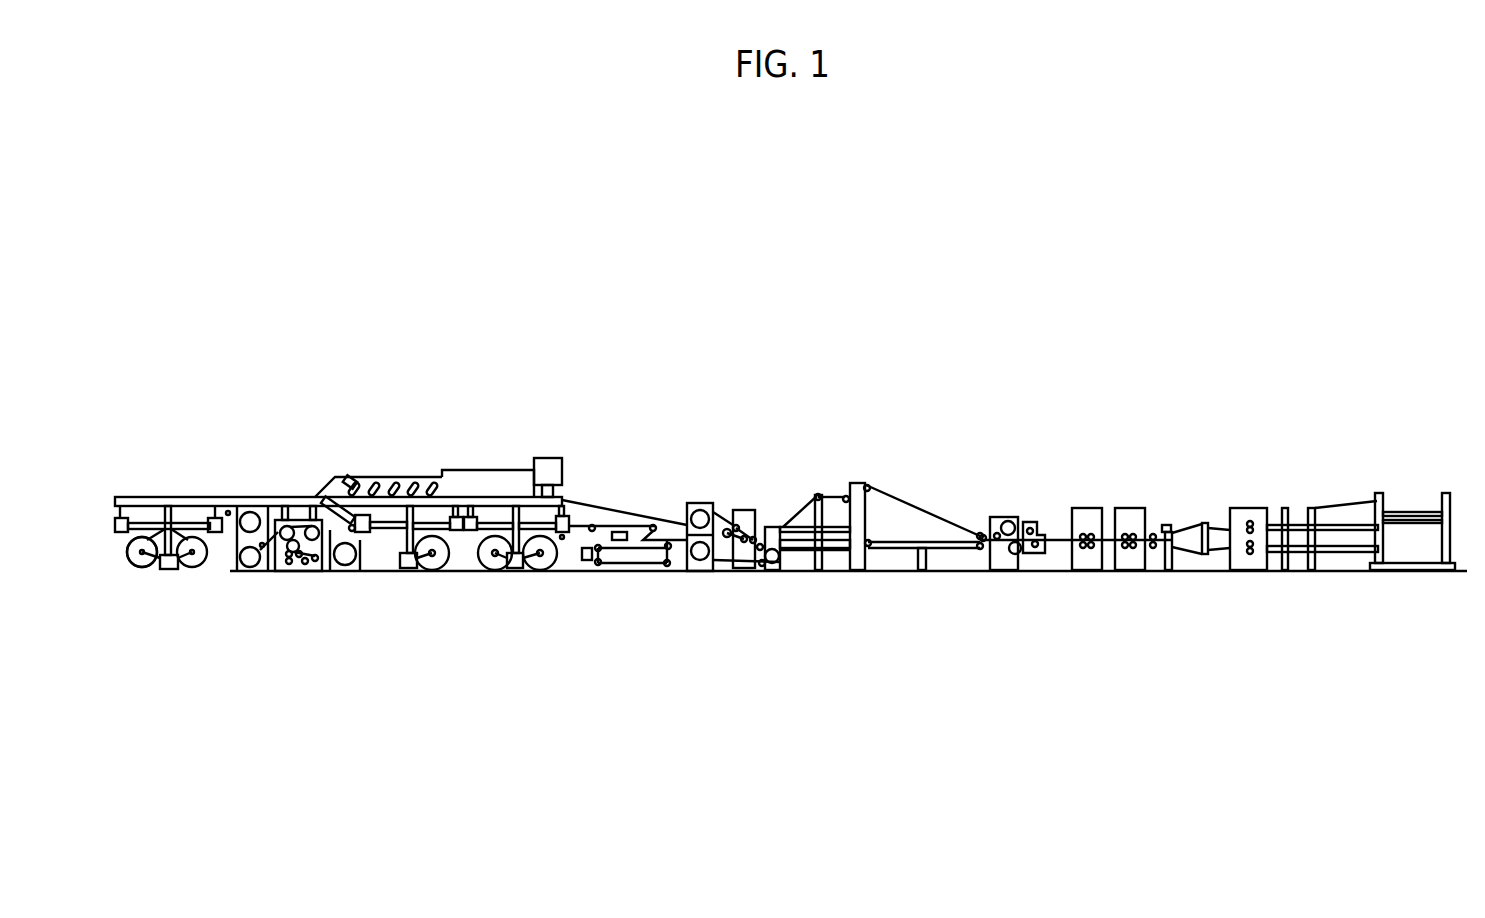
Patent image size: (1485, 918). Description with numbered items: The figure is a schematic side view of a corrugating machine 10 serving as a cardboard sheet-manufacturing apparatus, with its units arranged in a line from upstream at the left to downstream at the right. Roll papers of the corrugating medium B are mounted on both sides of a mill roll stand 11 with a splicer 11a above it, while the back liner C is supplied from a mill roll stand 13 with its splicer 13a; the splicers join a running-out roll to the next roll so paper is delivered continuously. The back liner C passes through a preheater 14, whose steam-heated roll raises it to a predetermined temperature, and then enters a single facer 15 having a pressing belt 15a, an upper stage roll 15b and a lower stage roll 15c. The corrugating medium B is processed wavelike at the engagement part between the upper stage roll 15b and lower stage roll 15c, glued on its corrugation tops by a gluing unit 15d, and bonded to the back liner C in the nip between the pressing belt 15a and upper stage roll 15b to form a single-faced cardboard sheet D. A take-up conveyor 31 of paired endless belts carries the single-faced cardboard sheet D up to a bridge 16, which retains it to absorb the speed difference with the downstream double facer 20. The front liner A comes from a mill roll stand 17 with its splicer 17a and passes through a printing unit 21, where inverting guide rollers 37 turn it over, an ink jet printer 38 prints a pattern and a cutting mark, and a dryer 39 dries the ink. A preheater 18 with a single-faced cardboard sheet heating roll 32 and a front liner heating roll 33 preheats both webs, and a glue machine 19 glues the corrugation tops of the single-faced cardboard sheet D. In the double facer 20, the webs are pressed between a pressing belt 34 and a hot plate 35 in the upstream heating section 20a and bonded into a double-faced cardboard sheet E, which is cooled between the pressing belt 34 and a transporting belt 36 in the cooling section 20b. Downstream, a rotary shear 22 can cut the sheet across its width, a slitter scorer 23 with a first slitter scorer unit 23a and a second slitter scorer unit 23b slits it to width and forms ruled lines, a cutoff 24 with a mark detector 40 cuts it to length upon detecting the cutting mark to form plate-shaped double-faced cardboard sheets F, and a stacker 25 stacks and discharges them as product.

The corrugating machine 10 is at (703, 367).
The mill roll stand 13 is at (103, 543).
The splicer 13a is at (142, 513).
The preheater 14 is at (245, 498).
The single facer 15 is at (291, 529).
The pressing belt 15a is at (300, 535).
The upper stage roll 15b is at (300, 558).
The lower stage roll 15c is at (305, 560).
The gluing unit 15d is at (290, 556).
The take-up conveyor 31 is at (345, 469).
The single-faced cardboard sheet D is at (357, 480).
The bridge 16 is at (408, 458).
The mill roll stand 11 is at (478, 488).
The splicer 11a is at (453, 553).
The splicer 17a is at (535, 528).
The mill roll stand 17 is at (617, 560).
The inverting guide rollers 37 is at (592, 525).
The ink jet printer 38 is at (620, 532).
The dryer 39 is at (586, 563).
The printing unit 21 is at (630, 453).
The single-faced cardboard sheet heating roll 32 is at (706, 528).
The front liner heating roll 33 is at (705, 570).
The preheater 18 is at (746, 490).
The glue machine 19 is at (748, 505).
The double facer 20 is at (874, 513).
The heating section 20a is at (803, 522).
The cooling section 20b is at (930, 527).
The pressing belt 34 is at (838, 497).
The hot plate 35 is at (837, 553).
The transporting belt 36 is at (897, 548).
The rotary shear 22 is at (1076, 504).
The slitter scorer 23 is at (1131, 490).
The first slitter scorer unit 23a is at (1083, 508).
The second slitter scorer unit 23b is at (1147, 518).
The mark detector 40 is at (1170, 525).
The cutoff 24 is at (1253, 504).
The stacker 25 is at (1420, 494).
The front liner A is at (632, 570).
The corrugating medium B is at (360, 540).
The back liner C is at (270, 575).
The double-faced cardboard sheet E is at (1060, 532).
The plate-shaped double-faced cardboard sheet F is at (1412, 510).